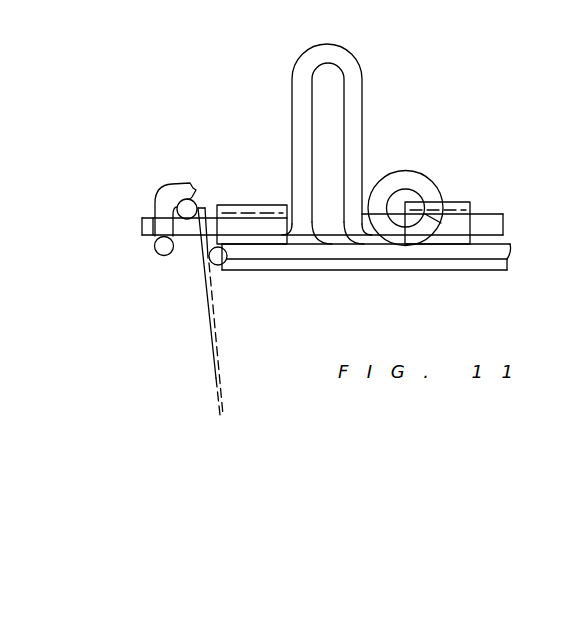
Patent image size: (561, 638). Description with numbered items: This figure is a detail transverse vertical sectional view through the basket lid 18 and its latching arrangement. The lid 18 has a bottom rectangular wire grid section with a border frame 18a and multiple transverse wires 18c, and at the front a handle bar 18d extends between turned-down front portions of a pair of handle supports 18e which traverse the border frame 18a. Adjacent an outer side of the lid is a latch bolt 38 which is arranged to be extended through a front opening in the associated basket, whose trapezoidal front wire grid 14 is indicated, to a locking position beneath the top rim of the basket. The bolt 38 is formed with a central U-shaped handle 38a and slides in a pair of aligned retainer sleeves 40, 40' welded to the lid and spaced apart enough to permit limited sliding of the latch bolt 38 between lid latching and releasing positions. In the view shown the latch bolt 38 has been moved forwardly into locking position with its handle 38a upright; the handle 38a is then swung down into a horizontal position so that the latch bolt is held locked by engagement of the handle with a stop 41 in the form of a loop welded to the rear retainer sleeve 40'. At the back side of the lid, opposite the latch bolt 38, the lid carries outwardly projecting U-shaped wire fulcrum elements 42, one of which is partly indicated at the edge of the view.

The wire fulcrum element 42 is at (9, 10).
The U-shaped handle 38a is at (318, 47).
The latch bolt 38 is at (142, 226).
The basket lid 18 is at (358, 255).
The border frame 18a is at (206, 262).
The transverse wire 18c is at (437, 271).
The handle bar 18d is at (165, 253).
The handle support 18e is at (172, 190).
The retainer sleeve 40 is at (250, 188).
The rear retainer sleeve 40' is at (459, 197).
The stop 41 is at (412, 175).
The front wire grid 14 is at (214, 377).